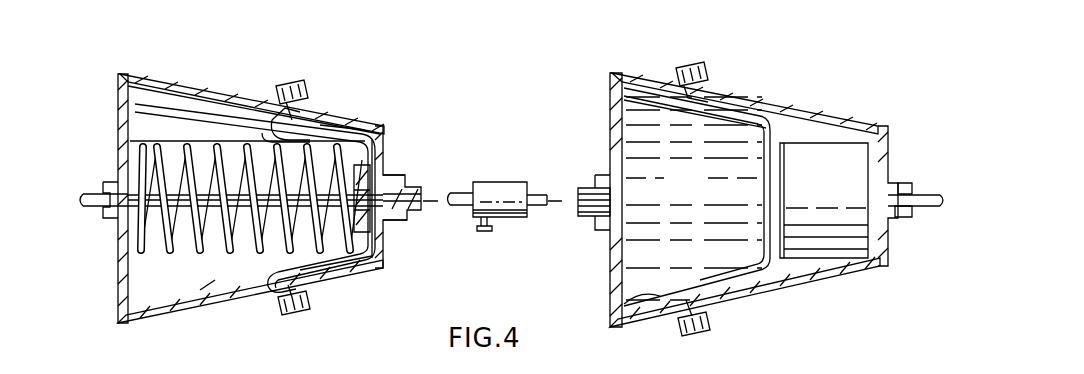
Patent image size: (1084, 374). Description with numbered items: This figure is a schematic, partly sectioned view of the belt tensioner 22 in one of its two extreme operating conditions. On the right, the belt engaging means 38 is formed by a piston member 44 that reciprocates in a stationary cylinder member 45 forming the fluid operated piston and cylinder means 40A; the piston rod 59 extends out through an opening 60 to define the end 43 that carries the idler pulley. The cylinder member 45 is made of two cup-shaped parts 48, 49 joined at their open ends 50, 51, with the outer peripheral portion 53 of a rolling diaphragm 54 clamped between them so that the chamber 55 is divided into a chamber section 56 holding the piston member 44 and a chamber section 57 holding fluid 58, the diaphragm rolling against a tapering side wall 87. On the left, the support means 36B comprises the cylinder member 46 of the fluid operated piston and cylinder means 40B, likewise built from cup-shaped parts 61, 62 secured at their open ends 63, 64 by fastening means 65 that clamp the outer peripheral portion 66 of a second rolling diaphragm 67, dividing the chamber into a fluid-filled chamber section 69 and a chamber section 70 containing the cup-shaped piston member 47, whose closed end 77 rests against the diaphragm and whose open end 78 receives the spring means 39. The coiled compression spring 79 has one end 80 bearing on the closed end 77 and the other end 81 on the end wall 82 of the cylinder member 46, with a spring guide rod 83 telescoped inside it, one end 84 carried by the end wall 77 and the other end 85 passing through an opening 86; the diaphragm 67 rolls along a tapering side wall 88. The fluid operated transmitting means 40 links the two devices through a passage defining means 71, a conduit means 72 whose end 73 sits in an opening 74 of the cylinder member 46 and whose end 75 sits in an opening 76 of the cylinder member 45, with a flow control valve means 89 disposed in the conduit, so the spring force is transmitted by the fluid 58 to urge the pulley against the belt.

The belt tensioner 22 is at (548, 70).
The support means 36B is at (790, 290).
The belt engaging means 38 is at (912, 180).
The spring means 39 is at (205, 150).
The fluid operated transmitting means 40 is at (438, 170).
The fluid operated piston and cylinder means 40A is at (880, 108).
The fluid operated piston and cylinder means 40B is at (305, 70).
The end of piston member 43 is at (942, 195).
The piston member 44 is at (820, 150).
The cylinder member 45 is at (748, 96).
The cylinder member 46 is at (195, 84).
The piston member 47 is at (340, 138).
The cup-shaped part 48 is at (732, 312).
The cup-shaped part 49 is at (610, 274).
The open end 50 is at (708, 76).
The open end 51 is at (678, 82).
The outer peripheral portion 53 is at (690, 316).
The rolling diaphragm 54 is at (760, 300).
The chamber 55 is at (815, 262).
The chamber section 56 is at (830, 268).
The chamber section 57 is at (640, 110).
The fluid 58 is at (645, 150).
The piston rod 59 is at (912, 208).
The opening 60 is at (896, 210).
The cup-shaped part 61 is at (368, 135).
The cup-shaped part 62 is at (163, 80).
The open end 63 is at (305, 100).
The open end 64 is at (288, 82).
The fastening means 65 is at (292, 318).
The outer peripheral portion 66 is at (262, 292).
The rolling diaphragm 67 is at (350, 130).
The chamber section 69 is at (318, 277).
The chamber section 70 is at (125, 288).
The passage defining means 71 is at (464, 175).
The conduit means 72 is at (534, 165).
The end of conduit means 73 is at (414, 214).
The opening 74 is at (403, 222).
The end of conduit means 75 is at (598, 218).
The opening 76 is at (635, 194).
The closed end 77 is at (372, 178).
The open end 78 is at (262, 130).
The coiled compression spring 79 is at (185, 148).
The end of spring 80 is at (365, 150).
The end of spring 81 is at (128, 150).
The end wall 82 is at (120, 242).
The spring guide rod 83 is at (175, 292).
The end of spring guide rod 84 is at (360, 190).
The end of spring guide rod 85 is at (92, 214).
The opening 86 is at (98, 196).
The tapering side wall 87 is at (635, 300).
The tapering side wall 88 is at (205, 300).
The flow control valve means 89 is at (500, 222).